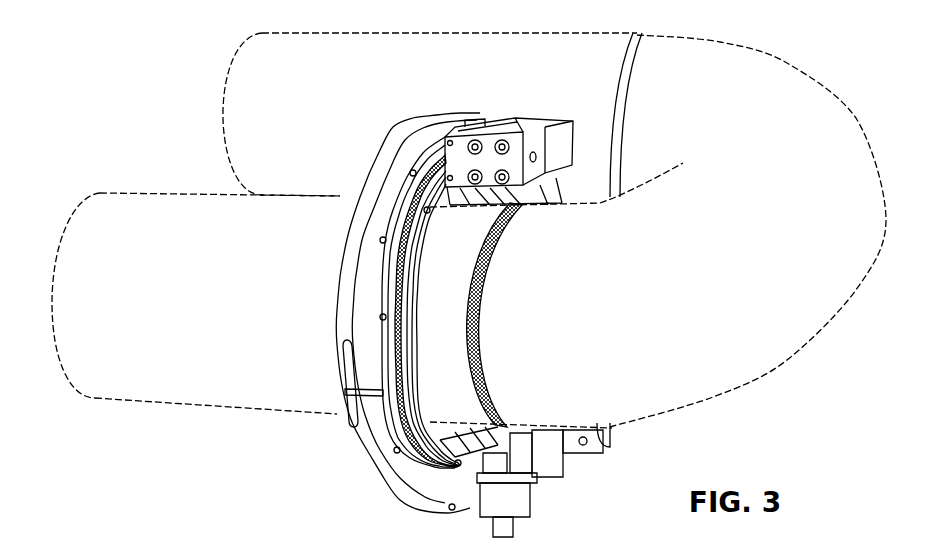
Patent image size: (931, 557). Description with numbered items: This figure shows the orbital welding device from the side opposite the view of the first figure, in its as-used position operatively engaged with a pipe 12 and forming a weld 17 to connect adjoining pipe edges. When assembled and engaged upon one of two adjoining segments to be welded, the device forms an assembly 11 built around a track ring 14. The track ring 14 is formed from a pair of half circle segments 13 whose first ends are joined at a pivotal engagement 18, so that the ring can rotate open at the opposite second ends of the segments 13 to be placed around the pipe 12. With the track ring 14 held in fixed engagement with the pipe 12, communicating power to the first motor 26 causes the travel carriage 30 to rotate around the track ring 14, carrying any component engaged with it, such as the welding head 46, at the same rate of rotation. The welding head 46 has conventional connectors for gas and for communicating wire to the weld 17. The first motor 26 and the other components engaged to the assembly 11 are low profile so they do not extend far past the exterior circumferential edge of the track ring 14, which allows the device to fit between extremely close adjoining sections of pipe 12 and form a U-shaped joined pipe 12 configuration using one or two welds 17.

The assembly 11 is at (440, 116).
The pipe 12 is at (250, 394).
The segments 13 is at (343, 288).
The track ring 14 is at (374, 164).
The weld 17 is at (483, 366).
The pivotal engagement 18 is at (340, 394).
The first motor 26 is at (553, 113).
The travel carriage 30 is at (367, 285).
The welding head 46 is at (542, 487).